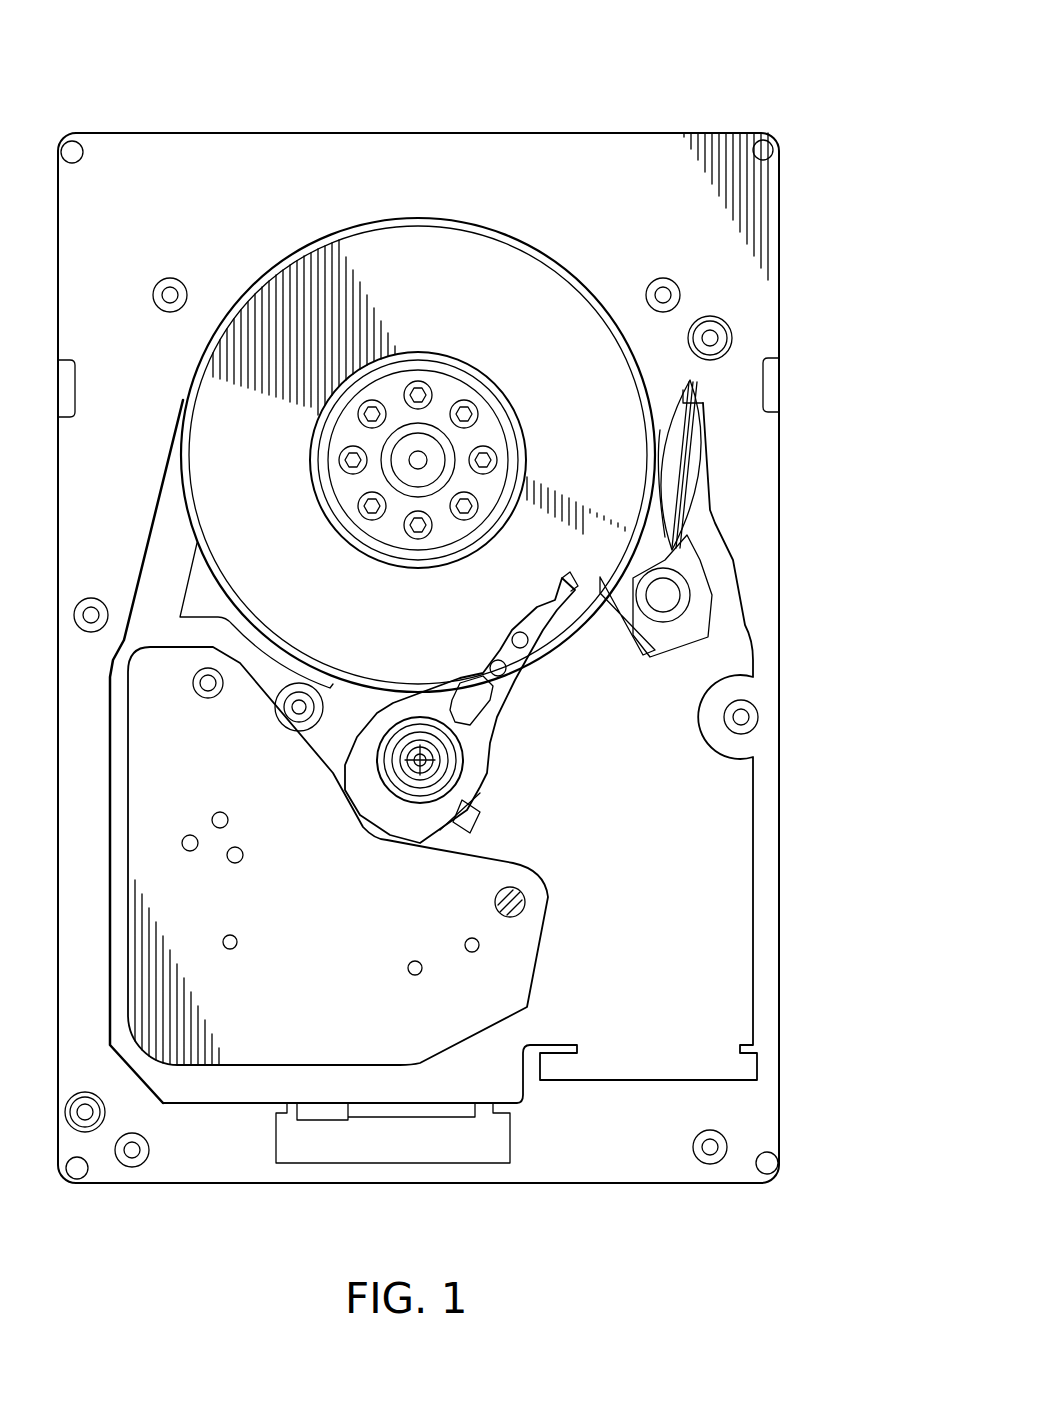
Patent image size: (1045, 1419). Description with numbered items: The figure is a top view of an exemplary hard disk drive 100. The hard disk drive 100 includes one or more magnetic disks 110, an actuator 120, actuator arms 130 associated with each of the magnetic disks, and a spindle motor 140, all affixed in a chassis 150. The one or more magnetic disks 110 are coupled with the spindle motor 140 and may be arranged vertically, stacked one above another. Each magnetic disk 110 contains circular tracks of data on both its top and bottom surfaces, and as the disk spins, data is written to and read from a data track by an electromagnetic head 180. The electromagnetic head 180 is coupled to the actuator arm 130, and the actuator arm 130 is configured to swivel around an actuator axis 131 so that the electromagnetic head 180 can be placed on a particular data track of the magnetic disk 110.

The hard disk drive 100 is at (614, 52).
The chassis 150 is at (185, 133).
The magnetic disk 110 is at (515, 275).
The spindle motor 140 is at (403, 467).
The electromagnetic head 180 is at (567, 577).
The actuator arm 130 is at (507, 645).
The actuator axis 131 is at (433, 770).
The actuator 120 is at (518, 957).